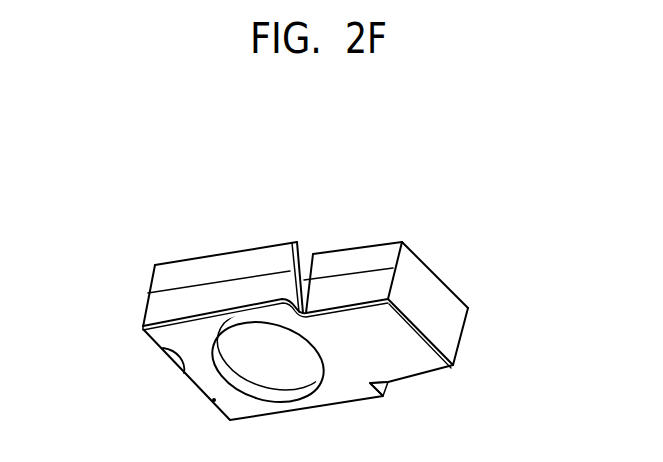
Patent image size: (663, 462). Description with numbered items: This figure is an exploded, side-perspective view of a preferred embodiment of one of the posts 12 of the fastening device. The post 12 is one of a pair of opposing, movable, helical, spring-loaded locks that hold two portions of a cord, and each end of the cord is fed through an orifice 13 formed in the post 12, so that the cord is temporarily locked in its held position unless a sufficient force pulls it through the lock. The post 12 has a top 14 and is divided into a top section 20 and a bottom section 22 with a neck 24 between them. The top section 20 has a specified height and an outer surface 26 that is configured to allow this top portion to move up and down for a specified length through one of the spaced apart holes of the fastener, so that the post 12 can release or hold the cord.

The post 12 is at (400, 381).
The orifice 13 is at (278, 352).
The top 14 is at (442, 295).
The top section 20 is at (357, 266).
The bottom section 22 is at (148, 287).
The neck 24 is at (308, 254).
The outer surface 26 is at (408, 248).